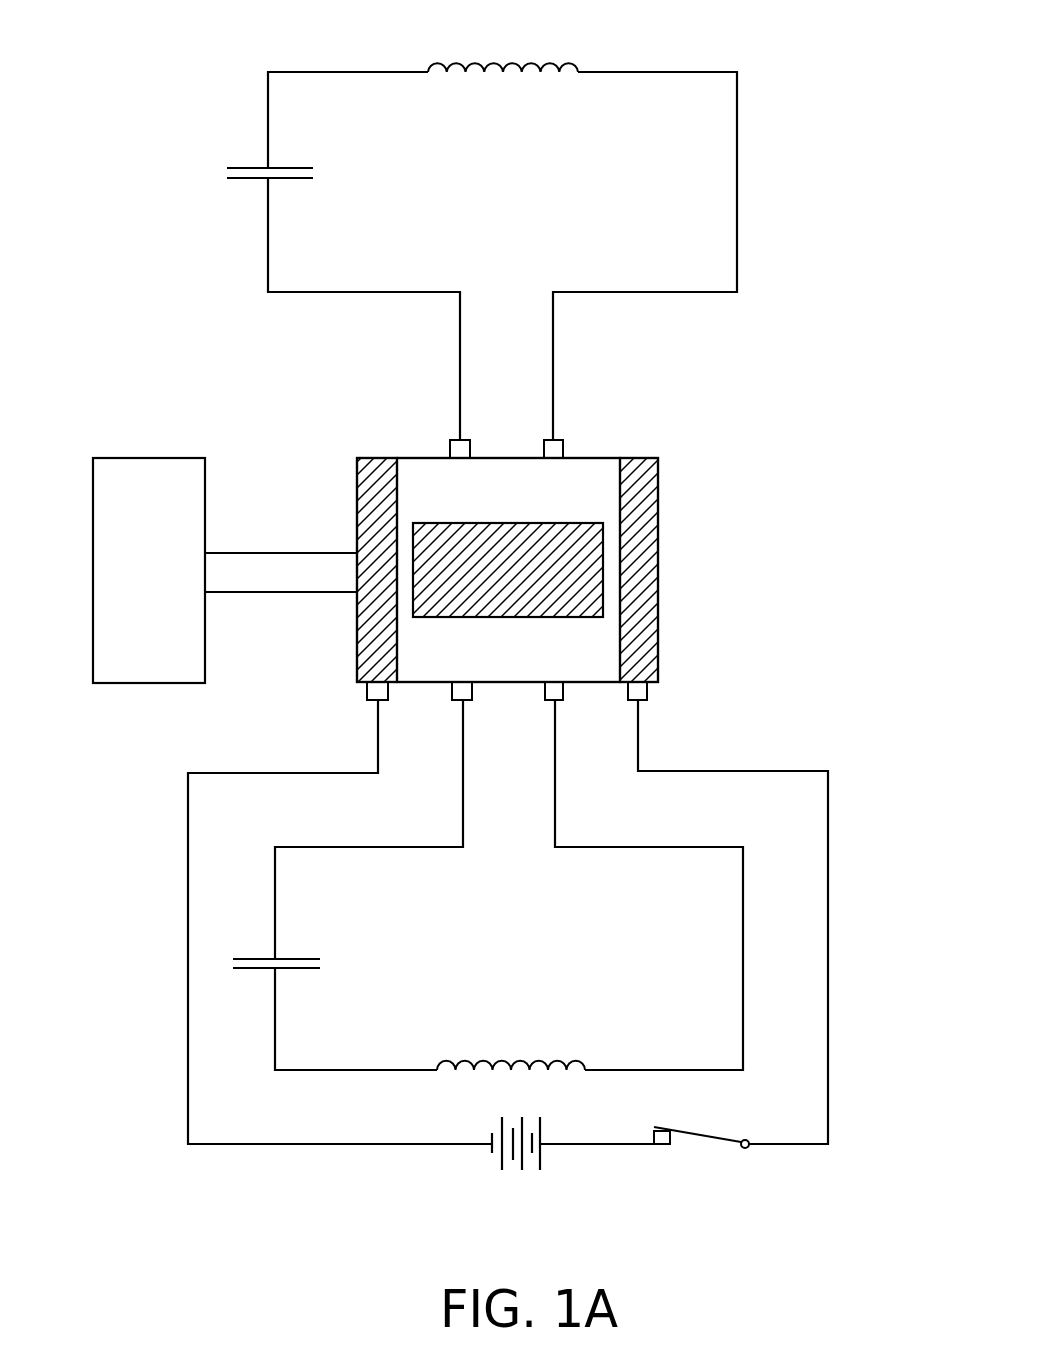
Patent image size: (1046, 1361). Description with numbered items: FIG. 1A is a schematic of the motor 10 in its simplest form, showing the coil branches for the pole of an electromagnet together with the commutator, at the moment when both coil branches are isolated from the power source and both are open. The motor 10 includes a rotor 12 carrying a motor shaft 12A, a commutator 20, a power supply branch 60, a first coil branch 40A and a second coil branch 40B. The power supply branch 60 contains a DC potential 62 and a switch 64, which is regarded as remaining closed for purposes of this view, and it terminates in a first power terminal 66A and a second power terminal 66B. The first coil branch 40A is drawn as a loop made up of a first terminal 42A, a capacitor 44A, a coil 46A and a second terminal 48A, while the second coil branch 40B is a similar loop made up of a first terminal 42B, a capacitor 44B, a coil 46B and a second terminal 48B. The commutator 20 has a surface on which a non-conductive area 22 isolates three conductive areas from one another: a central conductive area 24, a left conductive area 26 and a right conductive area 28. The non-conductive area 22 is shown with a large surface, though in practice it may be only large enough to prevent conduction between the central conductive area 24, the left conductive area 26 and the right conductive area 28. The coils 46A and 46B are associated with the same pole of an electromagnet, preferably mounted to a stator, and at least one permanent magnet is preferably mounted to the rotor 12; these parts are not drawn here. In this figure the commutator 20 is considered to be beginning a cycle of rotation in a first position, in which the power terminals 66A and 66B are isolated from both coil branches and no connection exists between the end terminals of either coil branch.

The motor 10 is at (648, 42).
The rotor 12 is at (166, 590).
The motor shaft 12A is at (291, 590).
The commutator 20 is at (715, 498).
The non-conductive area 22 is at (524, 668).
The central conductive area 24 is at (458, 530).
The left conductive area 26 is at (367, 603).
The right conductive area 28 is at (652, 578).
The first coil branch 40A is at (641, 320).
The second coil branch 40B is at (627, 827).
The first terminal 42A is at (449, 447).
The first terminal 42B is at (453, 700).
The capacitor 44A is at (288, 181).
The capacitor 44B is at (290, 958).
The coil 46A is at (485, 74).
The coil 46B is at (497, 1060).
The second terminal 48A is at (567, 446).
The second terminal 48B is at (547, 700).
The power supply branch 60 is at (735, 744).
The DC potential 62 is at (541, 1158).
The switch 64 is at (690, 1127).
The first power terminal 66A is at (367, 698).
The second power terminal 66B is at (650, 700).